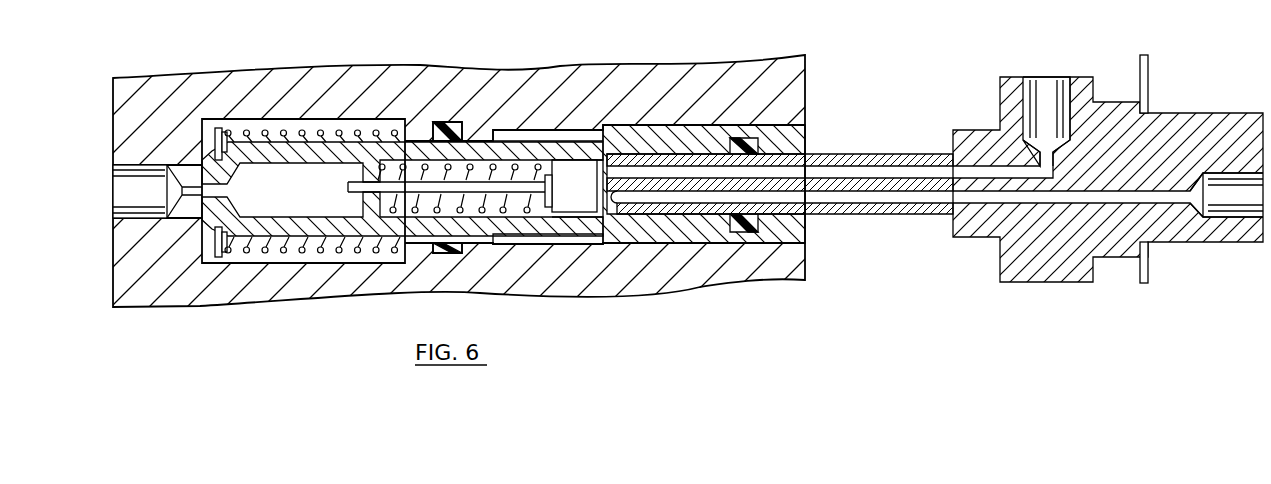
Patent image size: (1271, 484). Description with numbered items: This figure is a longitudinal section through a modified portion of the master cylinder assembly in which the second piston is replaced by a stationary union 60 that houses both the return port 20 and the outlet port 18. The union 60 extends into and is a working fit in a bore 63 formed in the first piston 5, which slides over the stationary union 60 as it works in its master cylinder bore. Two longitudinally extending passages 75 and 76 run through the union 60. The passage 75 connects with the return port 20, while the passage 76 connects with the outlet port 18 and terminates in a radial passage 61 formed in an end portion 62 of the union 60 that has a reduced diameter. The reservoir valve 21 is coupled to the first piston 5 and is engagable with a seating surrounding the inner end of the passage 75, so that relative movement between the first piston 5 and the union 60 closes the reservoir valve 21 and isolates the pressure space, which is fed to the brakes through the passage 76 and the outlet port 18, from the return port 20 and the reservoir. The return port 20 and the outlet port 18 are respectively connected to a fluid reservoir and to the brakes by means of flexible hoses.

The first piston 5 is at (414, 136).
The reservoir valve 21 is at (570, 172).
The end portion of reduced diameter 62 is at (617, 150).
The bore 63 is at (577, 214).
The radial passage 61 is at (627, 207).
The passage 75 is at (862, 175).
The passage 76 is at (891, 197).
The return port 20 is at (1050, 98).
The stationary union 60 is at (1186, 130).
The outlet port 18 is at (1241, 200).